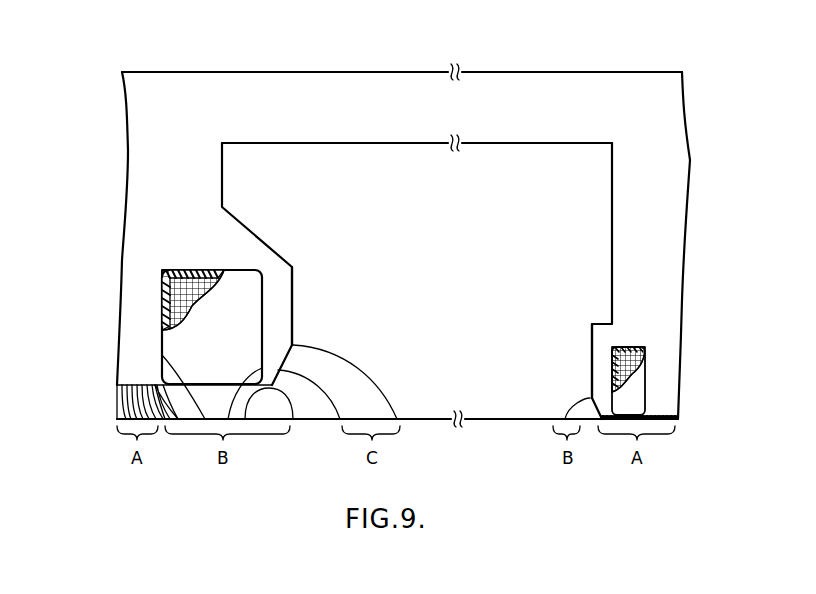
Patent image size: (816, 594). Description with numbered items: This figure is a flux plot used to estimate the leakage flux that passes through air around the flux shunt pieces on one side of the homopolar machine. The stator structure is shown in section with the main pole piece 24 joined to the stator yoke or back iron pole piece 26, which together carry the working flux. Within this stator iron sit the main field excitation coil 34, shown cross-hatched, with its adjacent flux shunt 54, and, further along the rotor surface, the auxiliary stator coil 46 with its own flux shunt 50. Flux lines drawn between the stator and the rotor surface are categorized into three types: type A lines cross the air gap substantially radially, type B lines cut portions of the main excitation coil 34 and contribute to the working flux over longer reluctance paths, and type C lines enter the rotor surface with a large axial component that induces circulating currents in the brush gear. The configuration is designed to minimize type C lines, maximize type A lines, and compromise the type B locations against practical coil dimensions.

The main pole piece 24 is at (142, 145).
The stator yoke or back iron pole piece 26 is at (368, 72).
The main field excitation coil 34 is at (162, 298).
The auxiliary stator coil 46 is at (632, 362).
The flux shunt 50 is at (600, 355).
The flux shunt 54 is at (278, 310).